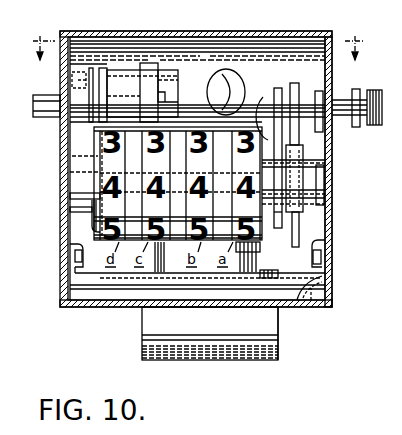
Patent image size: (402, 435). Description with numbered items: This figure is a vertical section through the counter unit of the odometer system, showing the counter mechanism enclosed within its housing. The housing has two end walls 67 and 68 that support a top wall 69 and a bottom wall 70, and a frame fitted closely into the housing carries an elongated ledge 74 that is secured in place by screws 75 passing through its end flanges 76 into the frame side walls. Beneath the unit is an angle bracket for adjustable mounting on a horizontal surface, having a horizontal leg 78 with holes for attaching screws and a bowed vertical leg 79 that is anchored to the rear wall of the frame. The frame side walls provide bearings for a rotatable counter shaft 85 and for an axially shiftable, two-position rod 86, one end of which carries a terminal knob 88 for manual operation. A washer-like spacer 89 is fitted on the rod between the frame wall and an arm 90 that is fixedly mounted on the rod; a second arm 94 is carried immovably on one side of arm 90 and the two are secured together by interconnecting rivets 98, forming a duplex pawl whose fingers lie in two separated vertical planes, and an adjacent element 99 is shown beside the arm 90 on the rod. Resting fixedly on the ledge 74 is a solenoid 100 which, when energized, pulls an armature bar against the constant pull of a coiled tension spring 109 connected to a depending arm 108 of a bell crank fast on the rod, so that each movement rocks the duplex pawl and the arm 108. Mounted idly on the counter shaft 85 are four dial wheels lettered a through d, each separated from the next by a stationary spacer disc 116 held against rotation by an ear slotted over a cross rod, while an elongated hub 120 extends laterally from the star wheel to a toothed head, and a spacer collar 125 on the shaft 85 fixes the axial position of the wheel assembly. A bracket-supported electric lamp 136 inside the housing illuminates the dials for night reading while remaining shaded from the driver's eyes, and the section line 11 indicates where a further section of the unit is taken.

The top wall 69 is at (181, 31).
The section line 11- 11 is at (200, 58).
The electric lamp 136 is at (240, 76).
The rivets 98 is at (265, 102).
The second arm 94 is at (280, 228).
The arm 90 is at (295, 83).
The slide block 99 is at (303, 165).
The terminal knob 88 is at (380, 81).
The rod 86 is at (46, 118).
The spacer 89 is at (330, 137).
The counter shaft 85 is at (326, 190).
The depending arm 108 is at (72, 163).
The spacer collar 125 is at (72, 193).
The coiled tension spring 109 is at (78, 210).
The stationary spacer disc 116 is at (198, 185).
The elongated hub 120 is at (233, 185).
The solenoid 100 is at (207, 263).
The end flanges 76 is at (73, 272).
The screws 75 is at (75, 244).
The ledge 74 is at (113, 291).
The bottom wall 70 is at (85, 306).
The end wall 68 is at (60, 291).
The end wall 67 is at (322, 278).
The horizontal leg 78 is at (225, 352).
The bowed vertical leg 79 is at (275, 318).